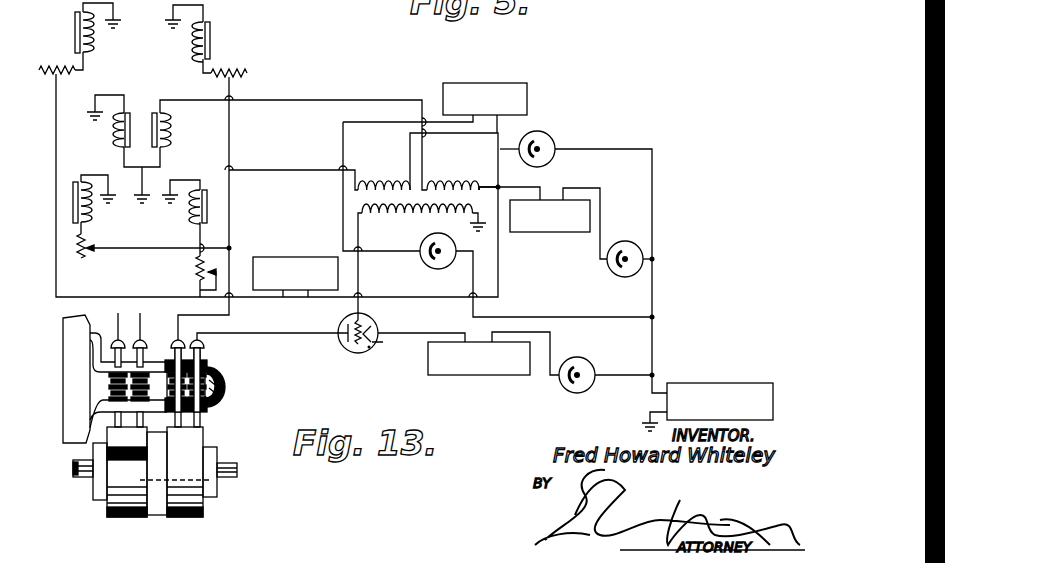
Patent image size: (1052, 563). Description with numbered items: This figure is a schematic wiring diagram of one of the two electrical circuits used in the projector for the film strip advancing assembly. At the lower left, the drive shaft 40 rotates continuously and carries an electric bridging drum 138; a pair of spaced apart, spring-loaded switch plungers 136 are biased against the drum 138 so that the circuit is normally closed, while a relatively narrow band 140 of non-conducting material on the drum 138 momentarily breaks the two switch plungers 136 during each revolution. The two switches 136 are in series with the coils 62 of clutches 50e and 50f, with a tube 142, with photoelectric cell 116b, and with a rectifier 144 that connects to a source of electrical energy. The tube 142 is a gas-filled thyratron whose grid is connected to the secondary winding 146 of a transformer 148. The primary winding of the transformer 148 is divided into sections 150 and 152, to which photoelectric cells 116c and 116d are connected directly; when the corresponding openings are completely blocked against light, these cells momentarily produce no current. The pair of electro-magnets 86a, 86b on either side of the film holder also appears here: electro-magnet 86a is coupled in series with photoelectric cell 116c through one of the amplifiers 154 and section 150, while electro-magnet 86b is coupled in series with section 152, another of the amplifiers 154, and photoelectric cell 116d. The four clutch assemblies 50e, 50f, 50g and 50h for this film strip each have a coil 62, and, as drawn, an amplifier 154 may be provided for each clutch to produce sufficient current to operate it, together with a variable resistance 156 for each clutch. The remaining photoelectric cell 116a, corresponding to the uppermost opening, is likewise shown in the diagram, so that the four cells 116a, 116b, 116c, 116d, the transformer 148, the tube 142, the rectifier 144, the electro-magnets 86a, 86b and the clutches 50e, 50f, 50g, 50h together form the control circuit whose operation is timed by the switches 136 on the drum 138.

The clutch assembly 50g is at (72, 29).
The clutch assembly 50e is at (211, 45).
The clutch assembly 50f is at (90, 211).
The clutch assembly 50h is at (209, 208).
The coil 62 is at (93, 46).
The variable resistance 156 is at (50, 68).
The electro-magnet 86a is at (132, 110).
The electro-magnet 86b is at (153, 111).
The amplifier 154 is at (297, 257).
The primary winding section 150 is at (390, 180).
The transformer 148 is at (453, 171).
The primary winding section 152 is at (467, 187).
The secondary winding 146 is at (407, 211).
The photoelectric cell 116a is at (556, 142).
The photoelectric cell 116b is at (592, 389).
The photoelectric cell 116c is at (453, 247).
The photoelectric cell 116d is at (628, 278).
The tube 142 is at (338, 352).
The rectifier 144 is at (708, 382).
The switch plunger 136 is at (200, 425).
The electric bridging drum 138 is at (108, 468).
The band of non-conducting material 140 is at (117, 447).
The drive shaft 40 is at (237, 470).